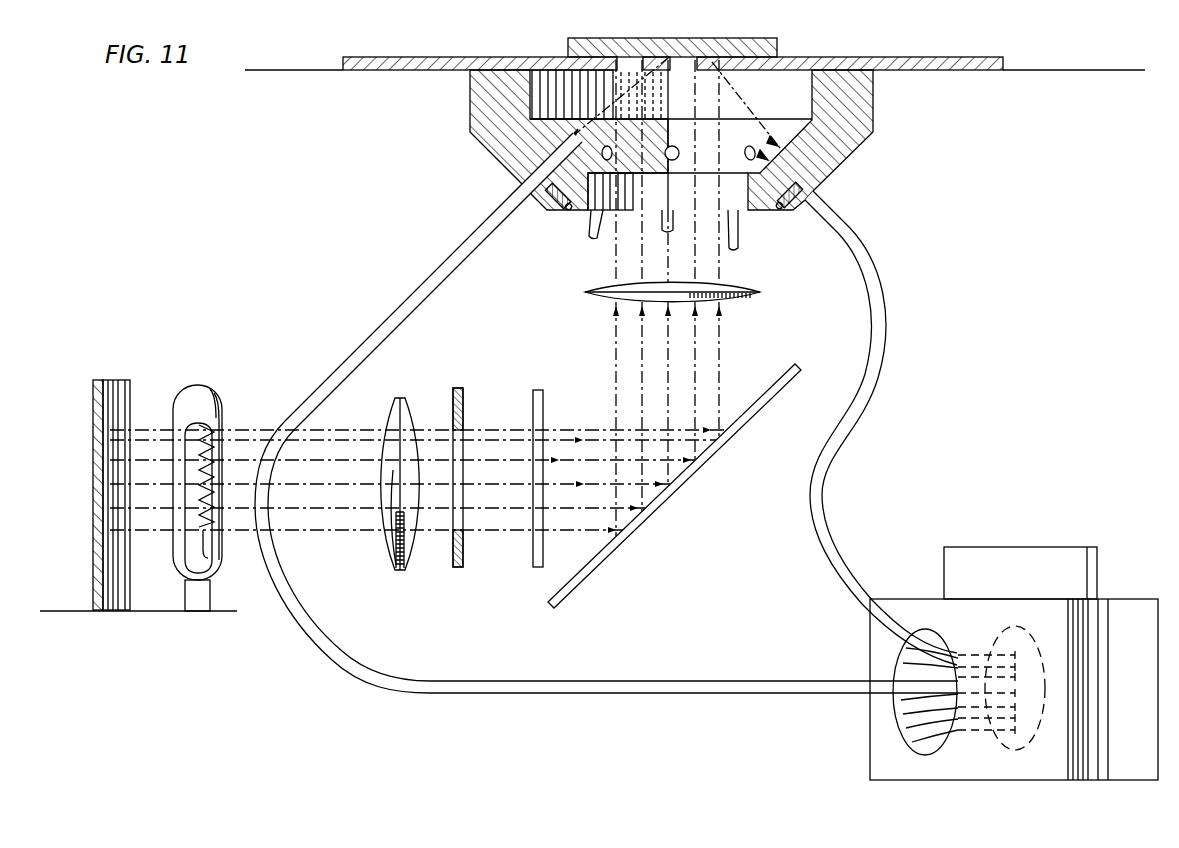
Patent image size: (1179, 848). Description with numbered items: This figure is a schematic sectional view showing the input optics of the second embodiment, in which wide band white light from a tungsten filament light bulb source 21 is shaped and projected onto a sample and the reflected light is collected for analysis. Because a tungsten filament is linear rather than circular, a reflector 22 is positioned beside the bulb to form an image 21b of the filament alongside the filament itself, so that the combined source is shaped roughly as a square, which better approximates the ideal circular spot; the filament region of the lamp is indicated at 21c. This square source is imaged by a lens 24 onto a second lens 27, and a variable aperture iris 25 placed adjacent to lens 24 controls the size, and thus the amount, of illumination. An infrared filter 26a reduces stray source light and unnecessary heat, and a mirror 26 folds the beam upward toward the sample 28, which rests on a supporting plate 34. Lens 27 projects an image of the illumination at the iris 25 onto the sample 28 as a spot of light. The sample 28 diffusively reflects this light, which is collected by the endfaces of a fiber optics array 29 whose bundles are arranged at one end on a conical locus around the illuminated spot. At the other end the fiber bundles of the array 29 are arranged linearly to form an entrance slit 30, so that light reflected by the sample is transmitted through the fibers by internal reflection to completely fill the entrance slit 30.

The tungsten filament light bulb source 21 is at (177, 573).
The image of filament 21b is at (217, 518).
The lamp filament 21c is at (193, 443).
The reflector 22 is at (98, 405).
The lens 24 is at (412, 418).
The variable aperture iris 25 is at (453, 553).
The mirror 26 is at (597, 570).
The infrared filter 26a is at (540, 393).
The lens 27 is at (760, 290).
The sample 28 is at (767, 52).
The fiber optics array 29 is at (457, 255).
The entrance slit 30 is at (1040, 653).
The supporting plate 34 is at (940, 60).